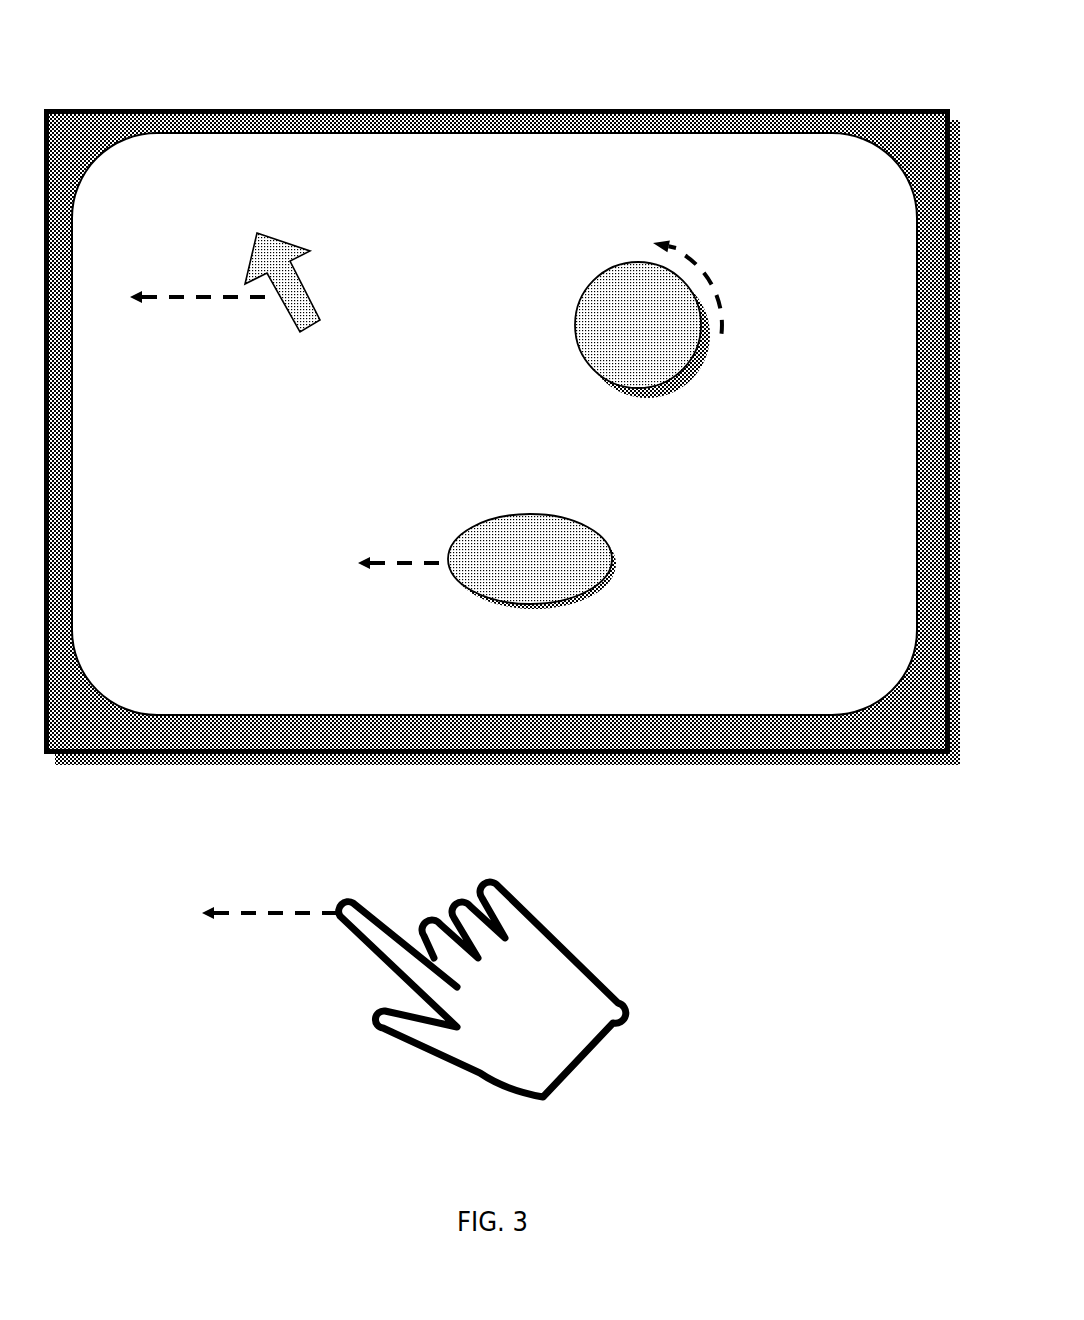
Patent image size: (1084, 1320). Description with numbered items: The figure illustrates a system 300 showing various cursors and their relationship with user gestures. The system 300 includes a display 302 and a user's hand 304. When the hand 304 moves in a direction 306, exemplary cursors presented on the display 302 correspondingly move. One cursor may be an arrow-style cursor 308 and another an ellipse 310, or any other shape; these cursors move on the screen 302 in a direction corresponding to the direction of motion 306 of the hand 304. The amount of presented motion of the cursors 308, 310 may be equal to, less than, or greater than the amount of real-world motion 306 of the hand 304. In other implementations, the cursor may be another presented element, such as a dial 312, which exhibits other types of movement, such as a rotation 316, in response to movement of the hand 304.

The system 300 is at (105, 88).
The display 302 is at (778, 108).
The user's hand 304 is at (565, 950).
The direction 306 is at (272, 913).
The arrow-style cursor 308 is at (320, 318).
The ellipse 310 is at (612, 552).
The dial 312 is at (685, 371).
The rotation 316 is at (703, 273).